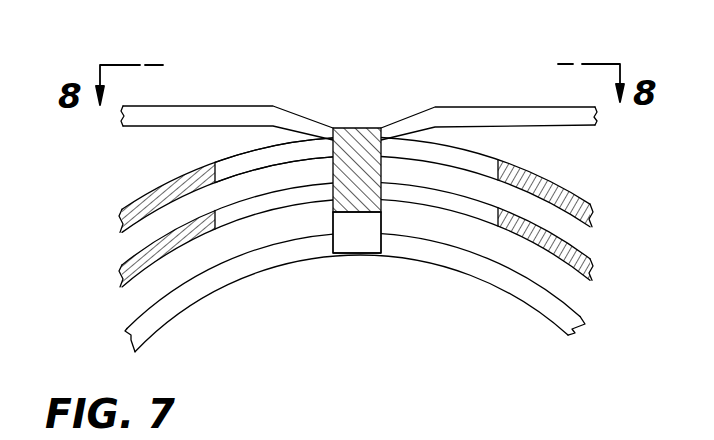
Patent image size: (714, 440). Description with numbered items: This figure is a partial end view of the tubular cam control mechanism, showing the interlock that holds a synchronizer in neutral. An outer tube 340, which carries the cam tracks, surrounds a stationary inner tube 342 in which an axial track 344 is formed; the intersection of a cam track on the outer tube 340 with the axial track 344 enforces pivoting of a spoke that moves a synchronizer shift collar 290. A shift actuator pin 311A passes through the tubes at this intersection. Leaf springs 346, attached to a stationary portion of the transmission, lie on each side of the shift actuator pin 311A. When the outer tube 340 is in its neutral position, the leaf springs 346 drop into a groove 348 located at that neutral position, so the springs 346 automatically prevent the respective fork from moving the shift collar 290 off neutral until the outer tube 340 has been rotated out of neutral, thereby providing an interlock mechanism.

The shift collar 290 is at (567, 322).
The outer tube 340 is at (545, 183).
The inner tube 342 is at (577, 260).
The axial track 344 is at (381, 189).
The leaf spring 346 is at (497, 117).
The groove 348 is at (317, 147).
The shift actuator pin 311A is at (333, 213).